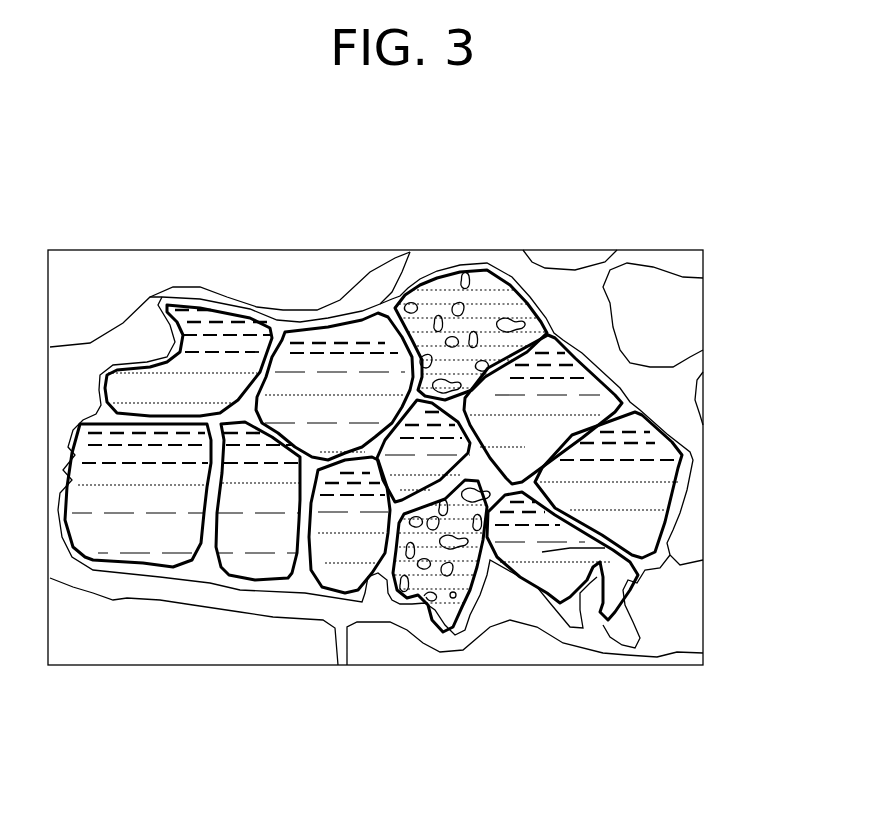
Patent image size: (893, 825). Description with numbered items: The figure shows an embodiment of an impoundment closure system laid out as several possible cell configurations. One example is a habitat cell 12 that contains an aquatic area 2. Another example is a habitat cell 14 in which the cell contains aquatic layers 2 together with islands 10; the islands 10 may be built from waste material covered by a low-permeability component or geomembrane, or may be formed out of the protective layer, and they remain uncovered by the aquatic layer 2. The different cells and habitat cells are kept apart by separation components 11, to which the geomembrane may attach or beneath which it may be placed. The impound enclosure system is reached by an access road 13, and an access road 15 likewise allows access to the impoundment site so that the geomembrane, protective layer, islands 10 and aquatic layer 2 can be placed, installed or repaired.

The aquatic area 2 is at (437, 303).
The islands 10 is at (478, 343).
The separation components 11 is at (573, 383).
The habitat cell 12 is at (575, 383).
The access road 13 is at (693, 460).
The habitat cell 14 is at (427, 580).
The access road 15 is at (278, 325).